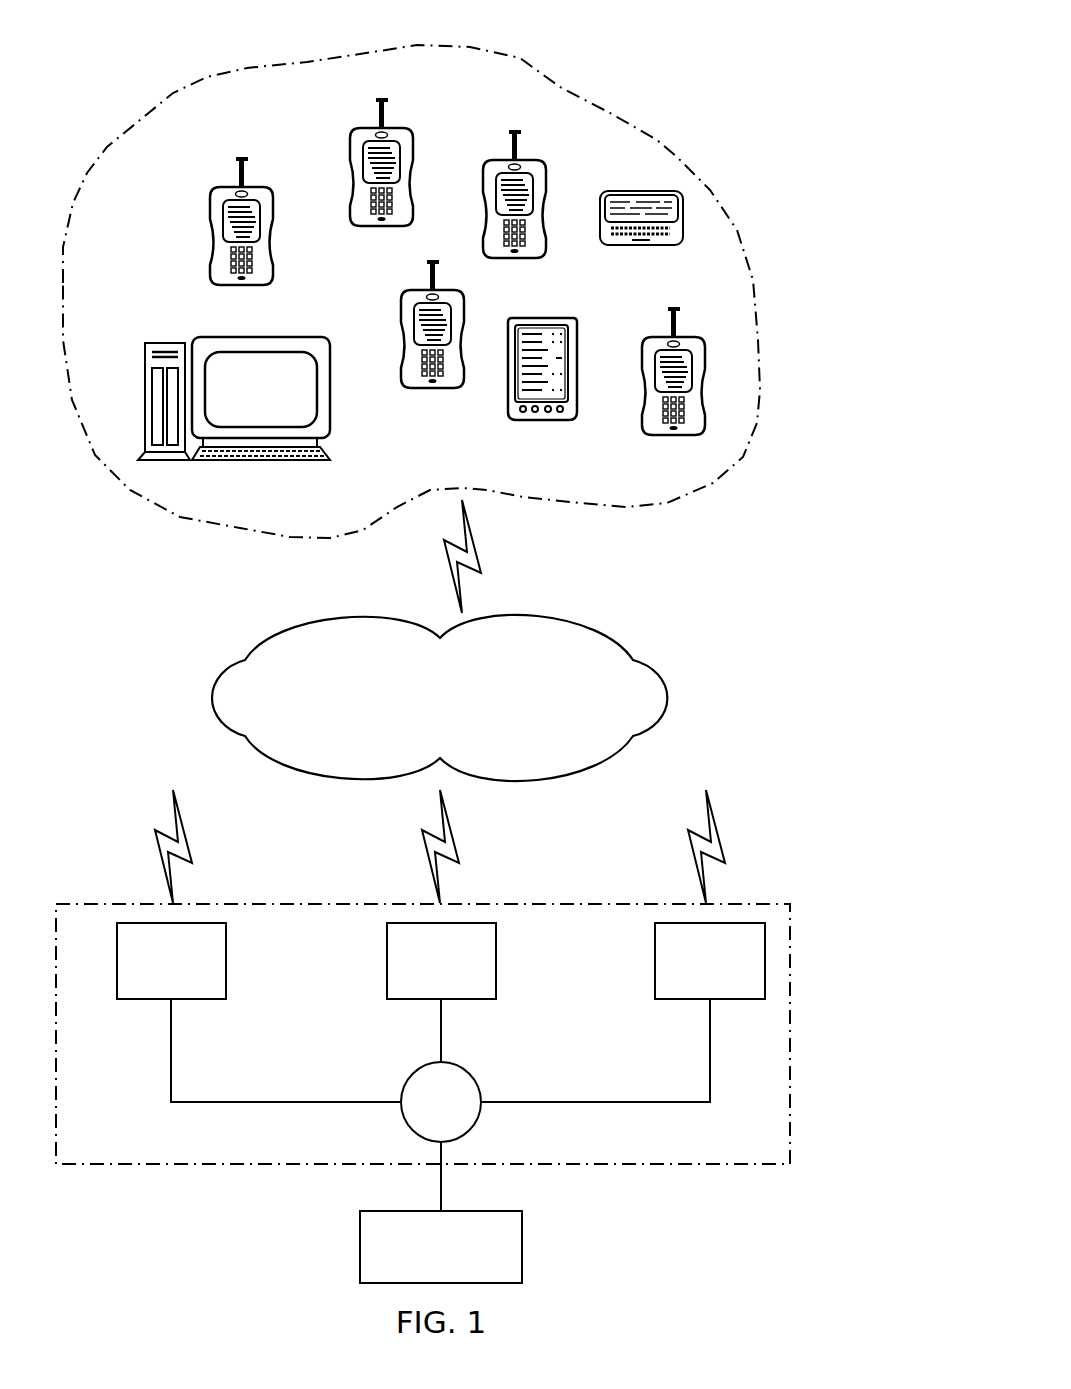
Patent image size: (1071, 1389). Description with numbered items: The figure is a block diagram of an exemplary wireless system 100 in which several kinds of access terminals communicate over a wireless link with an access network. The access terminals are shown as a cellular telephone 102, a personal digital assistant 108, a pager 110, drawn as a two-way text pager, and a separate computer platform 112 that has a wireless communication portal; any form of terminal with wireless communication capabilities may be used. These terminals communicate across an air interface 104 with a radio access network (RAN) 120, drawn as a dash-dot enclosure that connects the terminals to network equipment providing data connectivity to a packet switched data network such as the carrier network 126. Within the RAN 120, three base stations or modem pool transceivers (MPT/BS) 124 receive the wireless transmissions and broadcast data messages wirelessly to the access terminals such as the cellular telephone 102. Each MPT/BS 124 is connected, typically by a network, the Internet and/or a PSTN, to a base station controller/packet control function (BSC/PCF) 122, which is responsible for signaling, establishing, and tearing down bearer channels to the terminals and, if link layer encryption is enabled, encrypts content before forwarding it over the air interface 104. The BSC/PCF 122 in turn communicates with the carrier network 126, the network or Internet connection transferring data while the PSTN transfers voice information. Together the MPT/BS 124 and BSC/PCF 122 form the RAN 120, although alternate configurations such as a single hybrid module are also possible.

The wireless system 100 is at (700, 66).
The cellular telephone 102 is at (398, 128).
The air interface 104 is at (692, 665).
The personal digital assistant 108 is at (542, 422).
The pager 110 is at (640, 246).
The computer platform 112 is at (295, 337).
The radio access network (RAN) 120 is at (746, 903).
The base station controller/packet control function (BSC/PCF) 122 is at (460, 1063).
The modem pool transceiver/base station (MPT/BS) 124 is at (673, 1000).
The carrier network 126 is at (487, 1211).